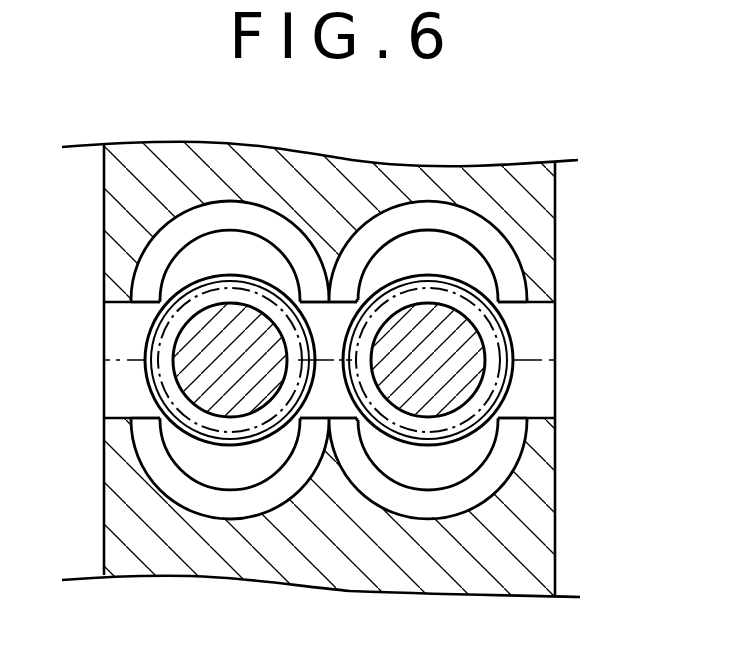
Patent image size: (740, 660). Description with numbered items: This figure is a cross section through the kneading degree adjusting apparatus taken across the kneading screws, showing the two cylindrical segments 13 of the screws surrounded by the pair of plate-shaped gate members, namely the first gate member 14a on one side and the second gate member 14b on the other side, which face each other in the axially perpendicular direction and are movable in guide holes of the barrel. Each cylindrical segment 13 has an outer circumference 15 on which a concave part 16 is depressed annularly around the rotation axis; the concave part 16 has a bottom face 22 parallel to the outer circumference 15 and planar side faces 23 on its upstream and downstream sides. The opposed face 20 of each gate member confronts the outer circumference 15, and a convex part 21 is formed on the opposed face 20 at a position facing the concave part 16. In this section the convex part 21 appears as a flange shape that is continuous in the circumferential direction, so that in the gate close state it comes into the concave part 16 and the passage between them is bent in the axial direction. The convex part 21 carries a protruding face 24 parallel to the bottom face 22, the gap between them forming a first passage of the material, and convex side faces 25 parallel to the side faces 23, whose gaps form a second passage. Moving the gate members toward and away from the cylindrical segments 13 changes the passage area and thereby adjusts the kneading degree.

The cylindrical segment 13 is at (130, 384).
The first gate member 14a is at (538, 212).
The second gate member 14b is at (503, 565).
The outer circumference 15 is at (513, 345).
The concave part 16 is at (205, 305).
The opposed face 20 is at (483, 228).
The convex part 21 is at (248, 236).
The bottom face 22 is at (481, 387).
The side faces 23 is at (497, 323).
The protruding face 24 is at (372, 258).
The convex side faces 25 is at (417, 220).